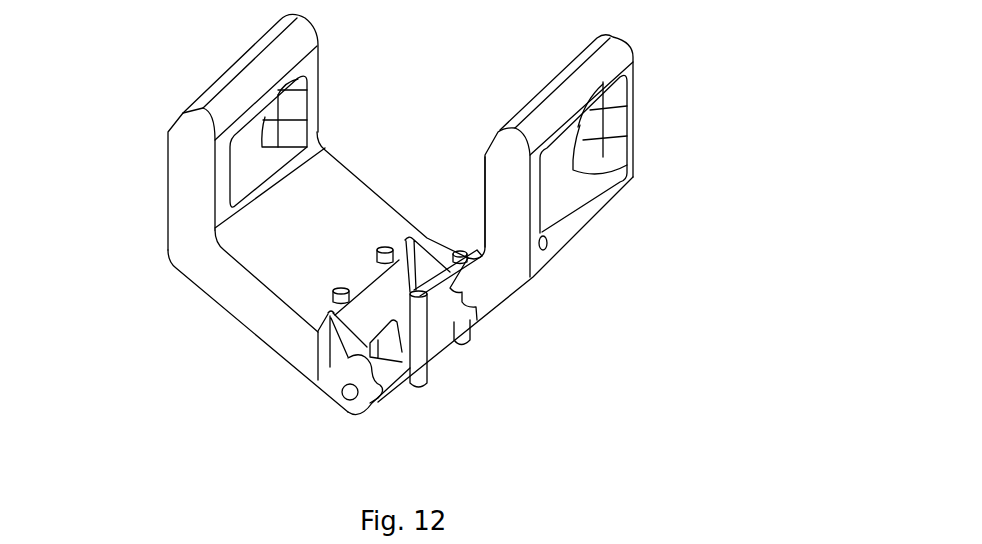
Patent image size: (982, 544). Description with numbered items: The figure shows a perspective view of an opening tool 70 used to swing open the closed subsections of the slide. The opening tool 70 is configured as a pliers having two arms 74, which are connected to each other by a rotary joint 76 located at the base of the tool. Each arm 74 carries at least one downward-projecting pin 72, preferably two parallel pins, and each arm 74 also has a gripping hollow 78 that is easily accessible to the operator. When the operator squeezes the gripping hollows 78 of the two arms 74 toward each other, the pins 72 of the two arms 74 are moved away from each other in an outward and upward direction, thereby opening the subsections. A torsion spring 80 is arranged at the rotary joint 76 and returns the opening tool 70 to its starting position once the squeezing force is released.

The opening tool 70 is at (178, 82).
The pin 72 is at (470, 340).
The arm 74 is at (183, 230).
The rotary joint 76 is at (343, 390).
The gripping hollow 78 is at (250, 145).
The torsion spring 80 is at (417, 330).